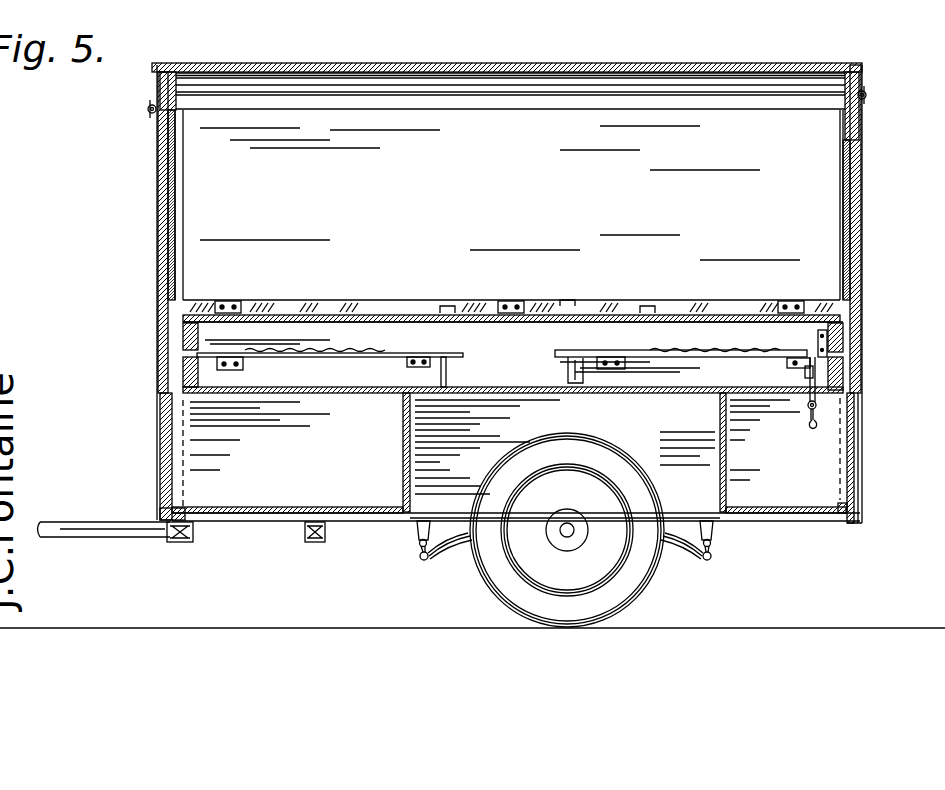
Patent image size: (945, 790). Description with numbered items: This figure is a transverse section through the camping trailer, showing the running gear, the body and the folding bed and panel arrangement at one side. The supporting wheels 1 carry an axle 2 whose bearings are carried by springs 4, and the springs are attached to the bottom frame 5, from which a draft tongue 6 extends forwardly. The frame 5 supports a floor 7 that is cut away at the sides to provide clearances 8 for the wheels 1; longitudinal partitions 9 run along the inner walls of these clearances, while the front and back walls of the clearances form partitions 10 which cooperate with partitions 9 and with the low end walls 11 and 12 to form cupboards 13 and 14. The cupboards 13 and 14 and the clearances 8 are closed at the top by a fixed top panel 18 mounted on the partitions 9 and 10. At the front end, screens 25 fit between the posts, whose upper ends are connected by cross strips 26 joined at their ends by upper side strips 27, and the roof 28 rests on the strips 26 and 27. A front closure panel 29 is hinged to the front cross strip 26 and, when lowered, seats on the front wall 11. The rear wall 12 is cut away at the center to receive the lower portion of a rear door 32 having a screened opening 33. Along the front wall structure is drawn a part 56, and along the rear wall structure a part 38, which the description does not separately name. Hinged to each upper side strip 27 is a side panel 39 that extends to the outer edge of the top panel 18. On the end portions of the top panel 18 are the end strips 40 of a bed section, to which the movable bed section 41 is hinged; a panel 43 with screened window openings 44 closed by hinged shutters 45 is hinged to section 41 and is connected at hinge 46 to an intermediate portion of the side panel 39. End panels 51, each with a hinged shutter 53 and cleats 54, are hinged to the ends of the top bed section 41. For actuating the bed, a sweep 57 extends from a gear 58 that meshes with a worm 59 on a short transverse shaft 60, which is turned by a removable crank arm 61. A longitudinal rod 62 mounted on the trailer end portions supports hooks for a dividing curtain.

The supporting wheels 1 is at (633, 586).
The axle 2 is at (567, 530).
The springs 4 is at (440, 548).
The bottom frame 5 is at (290, 522).
The draft tongue 6 is at (116, 537).
The floor 7 is at (250, 507).
The clearances 8 is at (455, 491).
The longitudinal partitions 9 is at (634, 414).
The partitions 10 is at (403, 433).
The front end wall 11 is at (160, 459).
The rear end wall 12 is at (872, 473).
The cupboard 13 is at (270, 455).
The cupboard 14 is at (786, 455).
The top panel 18 is at (688, 394).
The screens 25 is at (176, 207).
The cross strips 26 is at (150, 98).
The upper side strips 27 is at (608, 103).
The roof 28 is at (431, 64).
The front closure panel 29 is at (148, 293).
The rear door 32 is at (872, 291).
The screened opening 33 is at (845, 242).
The rear wall post 38 is at (860, 187).
The side panel 39 is at (500, 193).
The end strips of bed section 40 is at (192, 367).
The movable bed section 41 is at (183, 334).
The panel 43 is at (288, 313).
The screened window openings 44 is at (540, 322).
The hinged shutters 45 is at (337, 312).
The hinge connection 46 is at (233, 301).
The end panels 51 is at (376, 345).
The hinged shutter 53 is at (358, 356).
The cleats 54 is at (452, 373).
The front wall post 56 is at (157, 175).
The sweep 57 is at (820, 350).
The gear 58 is at (800, 375).
The worm 59 is at (796, 391).
The transverse shaft 60 is at (820, 409).
The removable crank arm 61 is at (808, 423).
The longitudinal rod 62 is at (533, 90).